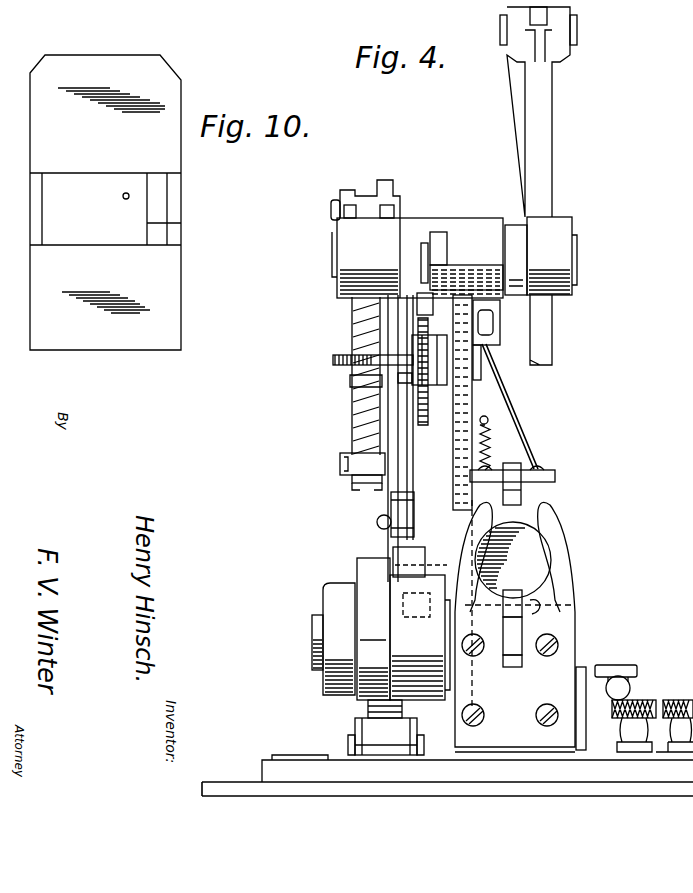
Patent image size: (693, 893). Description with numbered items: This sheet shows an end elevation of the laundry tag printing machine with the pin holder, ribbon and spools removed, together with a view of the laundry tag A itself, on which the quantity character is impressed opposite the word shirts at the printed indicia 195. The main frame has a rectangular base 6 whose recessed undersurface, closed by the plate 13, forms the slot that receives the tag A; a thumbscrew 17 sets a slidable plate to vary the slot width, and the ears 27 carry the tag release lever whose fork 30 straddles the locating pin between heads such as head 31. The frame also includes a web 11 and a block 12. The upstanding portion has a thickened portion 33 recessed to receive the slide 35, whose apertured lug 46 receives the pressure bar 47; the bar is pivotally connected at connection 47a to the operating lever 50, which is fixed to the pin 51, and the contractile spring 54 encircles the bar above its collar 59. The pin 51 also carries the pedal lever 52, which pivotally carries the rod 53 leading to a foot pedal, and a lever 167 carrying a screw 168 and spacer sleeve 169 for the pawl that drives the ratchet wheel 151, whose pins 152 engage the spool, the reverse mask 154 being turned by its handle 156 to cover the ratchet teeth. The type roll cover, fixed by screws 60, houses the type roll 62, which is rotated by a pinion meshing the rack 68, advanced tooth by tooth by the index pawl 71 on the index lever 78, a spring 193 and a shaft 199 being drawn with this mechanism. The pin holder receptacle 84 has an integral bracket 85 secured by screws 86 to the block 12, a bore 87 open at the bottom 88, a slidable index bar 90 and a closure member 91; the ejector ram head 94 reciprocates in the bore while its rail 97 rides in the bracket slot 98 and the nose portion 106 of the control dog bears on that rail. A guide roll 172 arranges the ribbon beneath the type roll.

In FIG. 10, the laundry tag A is at (167, 276).
In FIG. 10, the article count indicia 195 is at (56, 206).
In FIG. 4, the base 6 is at (264, 760).
In FIG. 4, the web 11 is at (503, 424).
In FIG. 4, the block 12 is at (556, 758).
In FIG. 4, the plate 13 is at (219, 782).
In FIG. 4, the thumbscrew 17 is at (641, 742).
In FIG. 4, the ears 27 is at (581, 682).
In FIG. 4, the fork 30 is at (631, 689).
In FIG. 4, the head 31 is at (620, 665).
In FIG. 4, the thickened portion 33 is at (452, 458).
In FIG. 4, the slide 35 is at (428, 692).
In FIG. 4, the apertured lug 46 is at (340, 463).
In FIG. 4, the pressure bar 47 is at (354, 313).
In FIG. 4, the pivotal connection 47a is at (331, 208).
In FIG. 4, the operating lever 50 is at (352, 197).
In FIG. 4, the pin 51 is at (577, 257).
In FIG. 4, the pedal lever 52 is at (549, 113).
In FIG. 4, the rod 53 is at (555, 326).
In FIG. 4, the contractile spring 54 is at (358, 381).
In FIG. 4, the collar 59 is at (332, 586).
In FIG. 4, the screws 60 is at (385, 628).
In FIG. 4, the type roll 62 is at (370, 703).
In FIG. 4, the rack 68 is at (403, 604).
In FIG. 4, the index pawl 71 is at (393, 557).
In FIG. 4, the index lever 78 is at (408, 538).
In FIG. 4, the pin holder receptacle 84 is at (548, 533).
In FIG. 4, the bracket 85 is at (510, 742).
In FIG. 4, the screws 86 is at (538, 714).
In FIG. 4, the bore 87 is at (540, 543).
In FIG. 4, the bottom opening 88 is at (543, 614).
In FIG. 4, the index bar 90 is at (522, 500).
In FIG. 4, the closure member 91 is at (556, 478).
In FIG. 4, the head 94 is at (540, 556).
In FIG. 4, the rail 97 is at (514, 592).
In FIG. 4, the slot 98 is at (519, 667).
In FIG. 4, the nose portion 106 is at (508, 640).
In FIG. 4, the ratchet wheel 151 is at (462, 397).
In FIG. 4, the pins 152 is at (405, 387).
In FIG. 4, the reverse mask 154 is at (392, 298).
In FIG. 4, the operating handle 156 is at (443, 248).
In FIG. 4, the lever 167 is at (507, 237).
In FIG. 4, the screw 168 is at (420, 262).
In FIG. 4, the spacer sleeve 169 is at (466, 268).
In FIG. 4, the guide roll 172 is at (378, 738).
In FIG. 4, the spring 193 is at (492, 447).
In FIG. 4, the screw shaft 199 is at (333, 360).